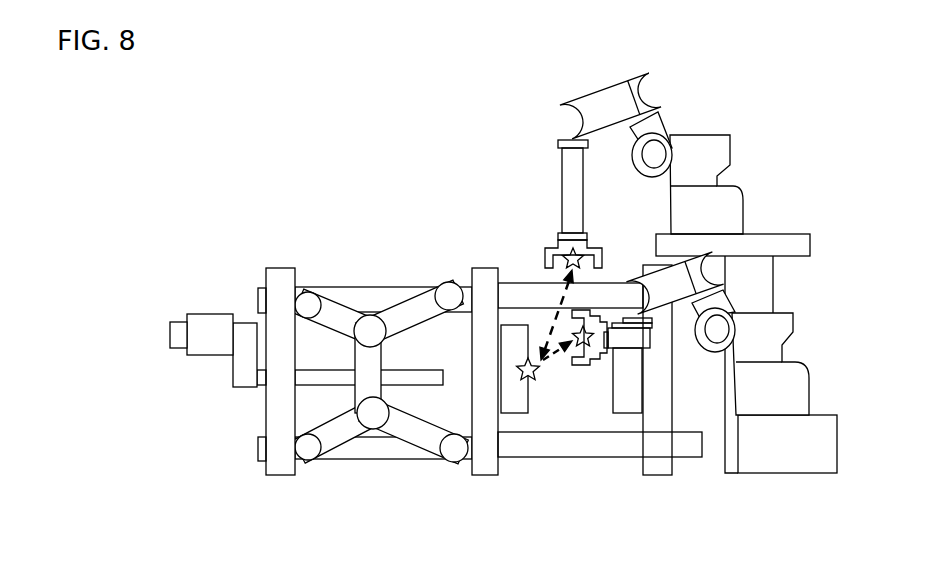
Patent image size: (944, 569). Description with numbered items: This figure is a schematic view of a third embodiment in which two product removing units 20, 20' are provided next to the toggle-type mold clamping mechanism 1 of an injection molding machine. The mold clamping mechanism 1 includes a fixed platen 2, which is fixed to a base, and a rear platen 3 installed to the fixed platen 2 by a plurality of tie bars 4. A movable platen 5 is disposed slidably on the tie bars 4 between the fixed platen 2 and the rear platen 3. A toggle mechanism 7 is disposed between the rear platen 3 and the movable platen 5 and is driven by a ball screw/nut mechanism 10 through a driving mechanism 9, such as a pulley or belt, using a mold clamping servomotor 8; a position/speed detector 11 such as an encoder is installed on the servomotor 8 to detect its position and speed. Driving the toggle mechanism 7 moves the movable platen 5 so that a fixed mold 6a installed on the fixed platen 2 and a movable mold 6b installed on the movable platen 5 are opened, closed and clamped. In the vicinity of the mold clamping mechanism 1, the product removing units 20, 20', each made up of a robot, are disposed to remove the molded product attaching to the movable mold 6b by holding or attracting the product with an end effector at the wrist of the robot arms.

The mold clamping mechanism 1 is at (443, 263).
The fixed platen 2 is at (657, 475).
The rear platen 3 is at (280, 475).
The tie bars 4 is at (575, 458).
The movable platen 5 is at (487, 475).
The fixed mold 6a is at (620, 415).
The movable mold 6b is at (528, 415).
The toggle mechanism 7 is at (368, 311).
The mold clamping servomotor 8 is at (220, 313).
The driving mechanism 9 is at (238, 368).
The ball screw/nut mechanism 10 is at (320, 385).
The position/speed detector 11 is at (172, 336).
The product removing unit 20 is at (677, 273).
The product removing unit 20' is at (751, 362).